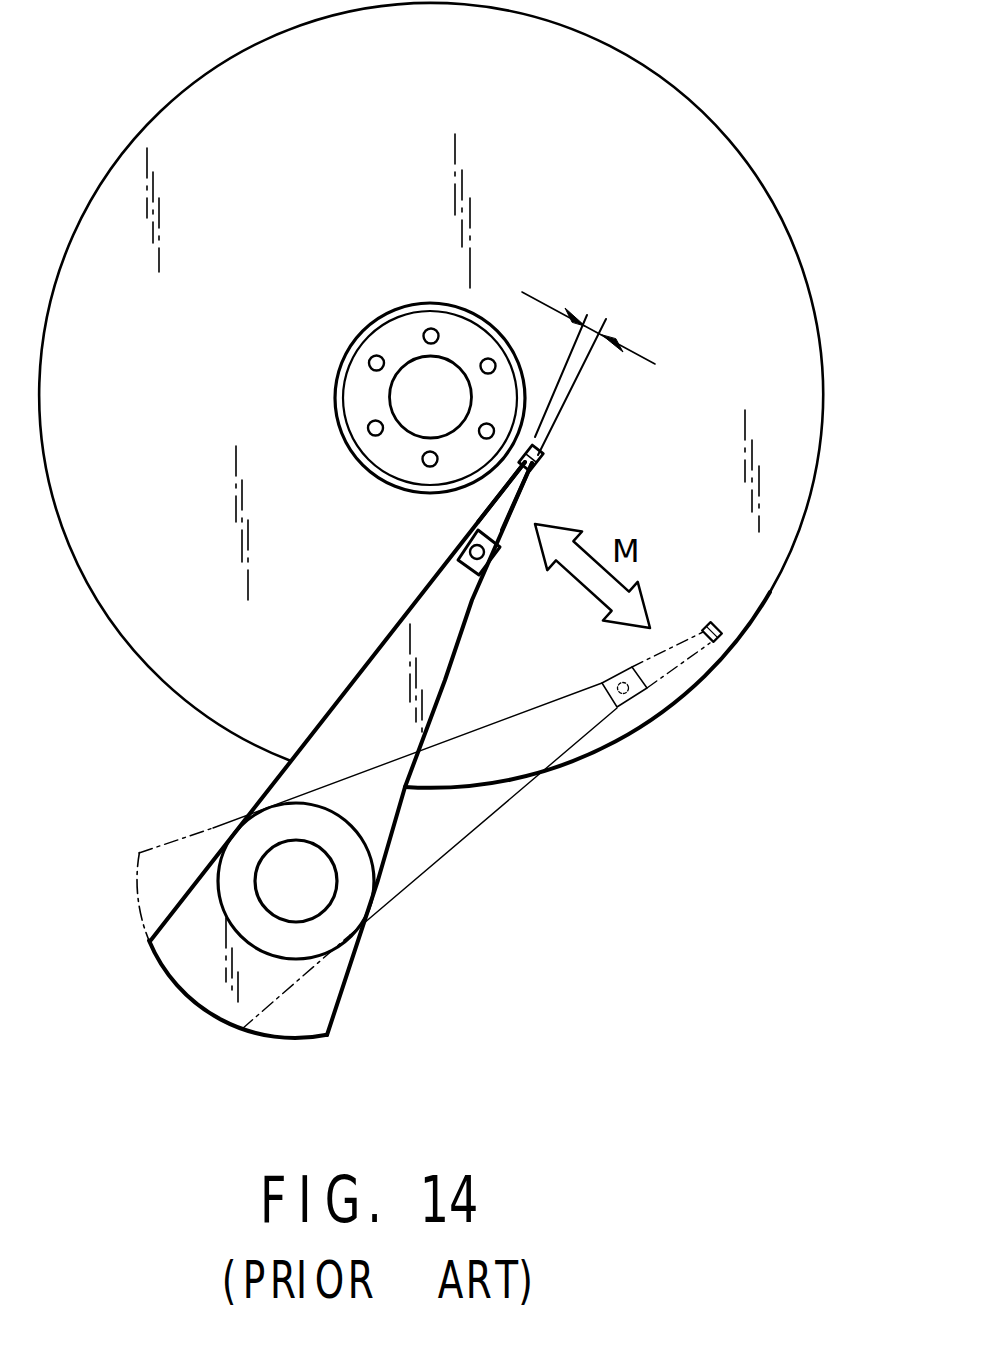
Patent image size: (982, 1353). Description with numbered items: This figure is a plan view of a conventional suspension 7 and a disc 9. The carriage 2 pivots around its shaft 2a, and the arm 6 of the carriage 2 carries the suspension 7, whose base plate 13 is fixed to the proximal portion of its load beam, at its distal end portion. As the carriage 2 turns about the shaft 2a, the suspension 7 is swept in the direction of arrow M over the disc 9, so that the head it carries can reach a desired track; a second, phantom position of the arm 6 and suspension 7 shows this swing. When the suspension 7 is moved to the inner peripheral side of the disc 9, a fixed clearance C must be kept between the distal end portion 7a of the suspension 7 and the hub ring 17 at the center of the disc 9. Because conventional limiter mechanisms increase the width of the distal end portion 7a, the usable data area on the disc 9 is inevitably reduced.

The disc 9 is at (804, 342).
The hub ring 17 is at (416, 490).
The arm 6 is at (326, 706).
The suspension 7 is at (517, 503).
The distal end portion of the suspension 7a is at (538, 448).
The base plate 13 is at (490, 567).
The carriage 2 is at (397, 832).
The shaft 2a is at (331, 893).